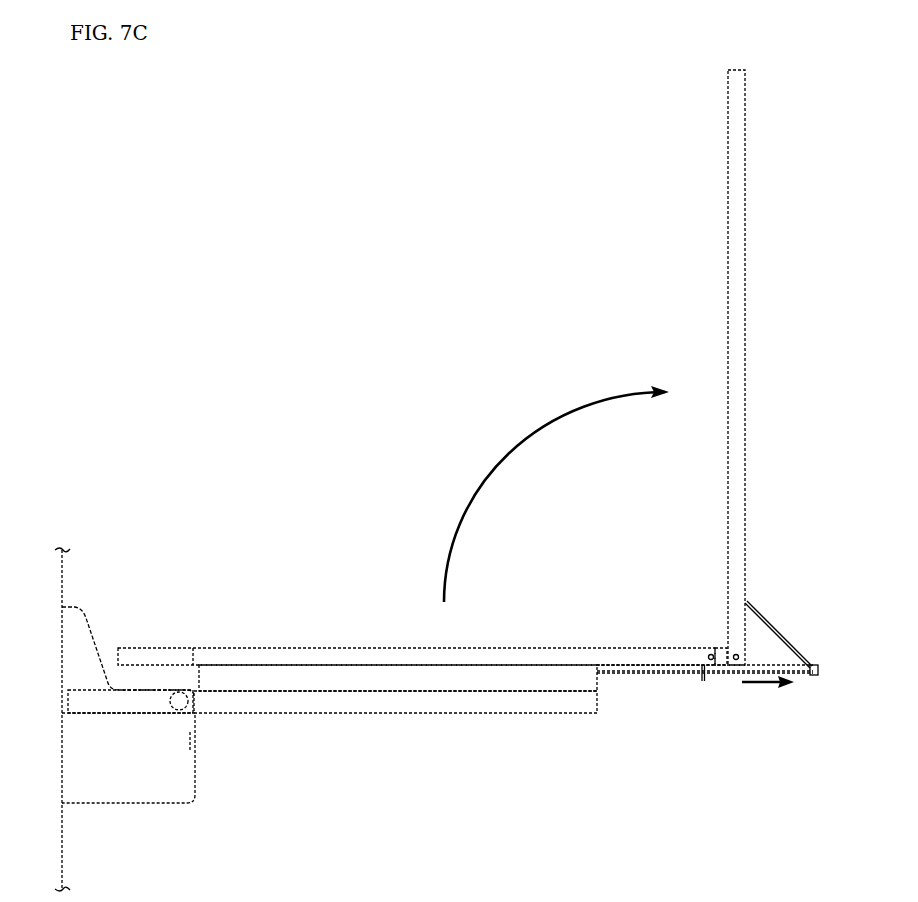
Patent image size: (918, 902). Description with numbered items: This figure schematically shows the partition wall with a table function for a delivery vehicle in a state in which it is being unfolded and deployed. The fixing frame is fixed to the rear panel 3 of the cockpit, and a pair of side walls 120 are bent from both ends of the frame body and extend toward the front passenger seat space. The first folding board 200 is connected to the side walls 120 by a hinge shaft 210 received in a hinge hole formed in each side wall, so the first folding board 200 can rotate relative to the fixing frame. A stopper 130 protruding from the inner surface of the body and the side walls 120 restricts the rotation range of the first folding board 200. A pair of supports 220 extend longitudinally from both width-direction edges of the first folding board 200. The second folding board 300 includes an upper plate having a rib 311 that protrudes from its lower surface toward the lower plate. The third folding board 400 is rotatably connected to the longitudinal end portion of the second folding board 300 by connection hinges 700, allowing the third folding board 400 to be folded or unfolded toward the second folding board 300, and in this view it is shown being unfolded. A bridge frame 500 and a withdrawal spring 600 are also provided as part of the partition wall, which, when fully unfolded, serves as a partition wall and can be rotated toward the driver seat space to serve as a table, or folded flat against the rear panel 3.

The rear panel 3 is at (62, 858).
The side walls 120 is at (135, 784).
The stopper 130 is at (70, 688).
The first folding board 200 is at (428, 702).
The hinge shaft 210 is at (183, 706).
The supports 220 is at (93, 705).
The second folding board 300 is at (540, 647).
The rib 311 is at (703, 682).
The third folding board 400 is at (737, 546).
The bridge frame 500 is at (636, 674).
The withdrawal spring 600 is at (793, 648).
The connection hinges 700 is at (722, 648).